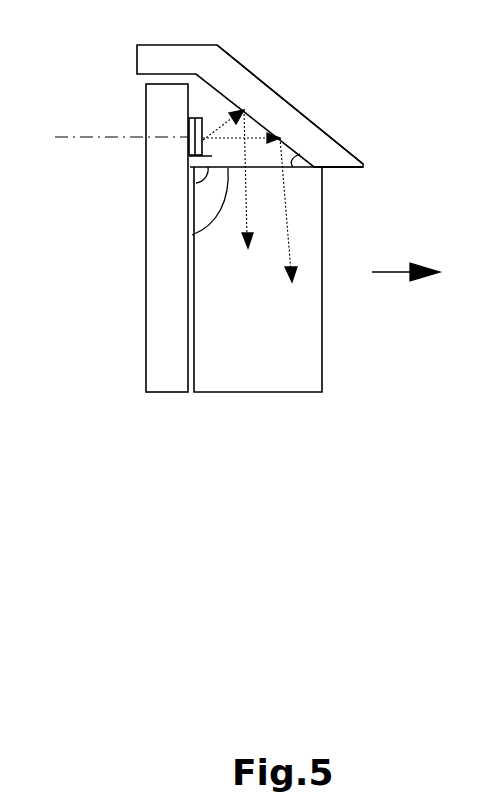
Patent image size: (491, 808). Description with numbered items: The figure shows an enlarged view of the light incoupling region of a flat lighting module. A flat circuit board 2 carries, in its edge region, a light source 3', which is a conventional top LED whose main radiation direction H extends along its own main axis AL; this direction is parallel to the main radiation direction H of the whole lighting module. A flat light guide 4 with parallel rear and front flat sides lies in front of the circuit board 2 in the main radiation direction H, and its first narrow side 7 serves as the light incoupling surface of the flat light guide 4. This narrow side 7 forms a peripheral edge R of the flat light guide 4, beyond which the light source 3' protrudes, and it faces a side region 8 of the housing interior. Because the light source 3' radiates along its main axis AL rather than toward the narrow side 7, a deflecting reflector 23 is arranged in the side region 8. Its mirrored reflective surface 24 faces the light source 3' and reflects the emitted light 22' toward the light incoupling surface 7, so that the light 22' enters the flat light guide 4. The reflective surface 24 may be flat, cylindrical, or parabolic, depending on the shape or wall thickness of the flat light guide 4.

The flat circuit board 2 is at (163, 357).
The light source 3' is at (162, 107).
The flat light guide 4 is at (303, 367).
The first narrow side 7 is at (190, 193).
The side region 8 is at (250, 51).
The deflecting reflector 23 is at (251, 74).
The mirrored reflective surface 24 is at (323, 167).
The light 22' is at (338, 196).
The peripheral edge R is at (210, 223).
The main radiation direction H is at (393, 272).
The main axis AL is at (62, 135).